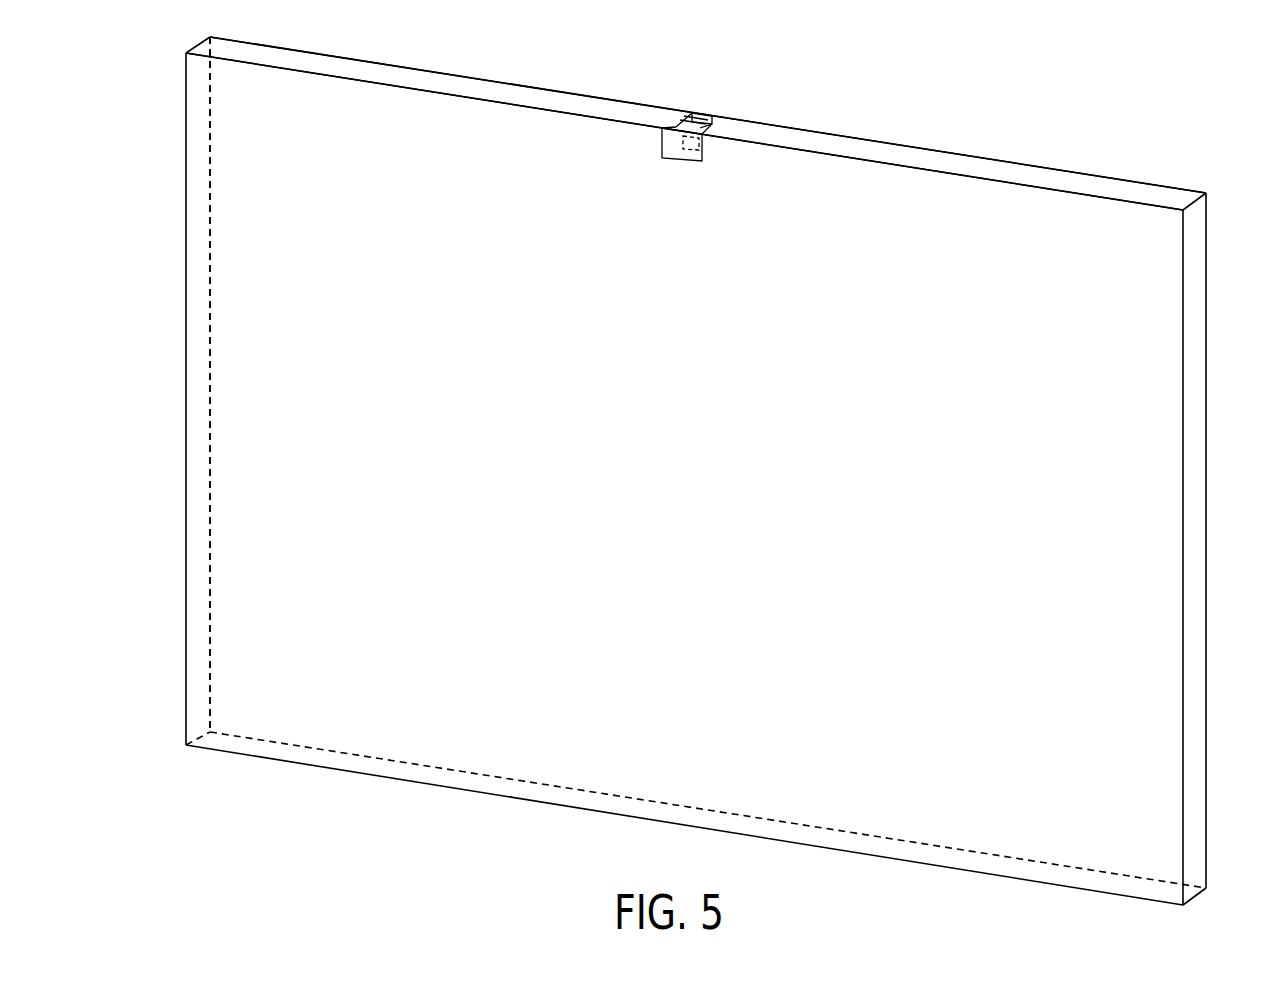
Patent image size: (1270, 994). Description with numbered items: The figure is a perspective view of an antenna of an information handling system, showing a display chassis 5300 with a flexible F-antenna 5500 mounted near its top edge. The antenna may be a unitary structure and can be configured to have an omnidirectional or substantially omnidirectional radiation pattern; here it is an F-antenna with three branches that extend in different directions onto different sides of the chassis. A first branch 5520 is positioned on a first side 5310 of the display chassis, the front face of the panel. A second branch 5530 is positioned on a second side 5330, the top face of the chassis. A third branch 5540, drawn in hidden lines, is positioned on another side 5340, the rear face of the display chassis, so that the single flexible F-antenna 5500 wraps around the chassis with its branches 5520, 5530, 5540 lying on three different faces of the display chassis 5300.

The display chassis 5300 is at (1173, 187).
The first side 5310 is at (532, 137).
The second side 5330 is at (598, 110).
The second side 5340 is at (226, 123).
The flexible F-antenna 5500 is at (689, 130).
The first branch 5520 is at (668, 160).
The second branch 5530 is at (700, 118).
The third branch 5540 is at (708, 150).